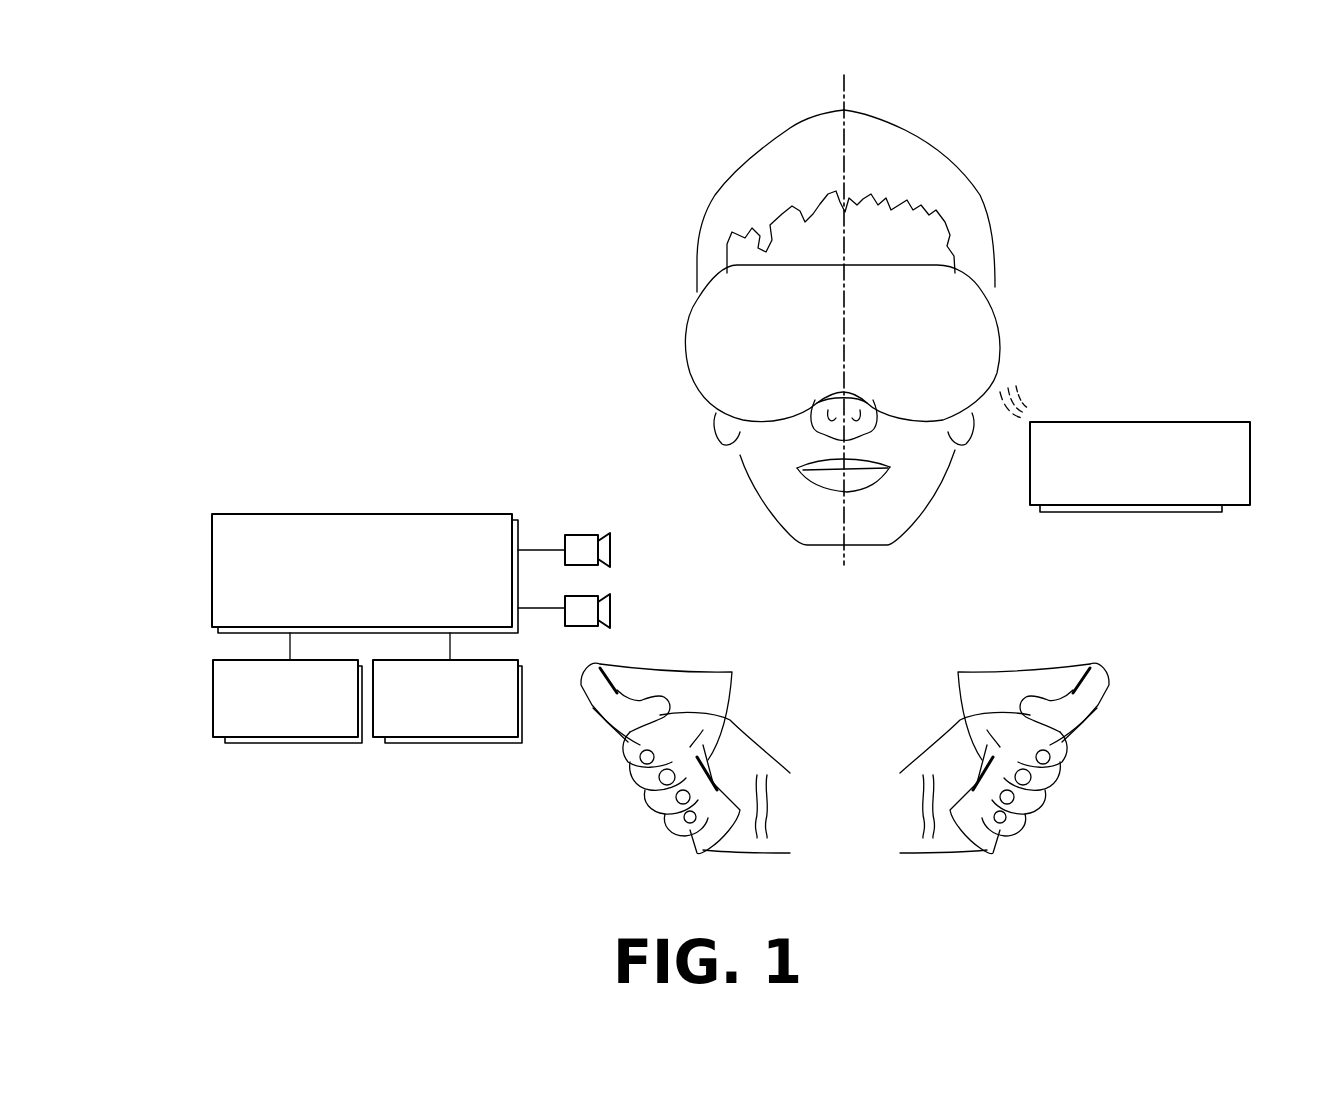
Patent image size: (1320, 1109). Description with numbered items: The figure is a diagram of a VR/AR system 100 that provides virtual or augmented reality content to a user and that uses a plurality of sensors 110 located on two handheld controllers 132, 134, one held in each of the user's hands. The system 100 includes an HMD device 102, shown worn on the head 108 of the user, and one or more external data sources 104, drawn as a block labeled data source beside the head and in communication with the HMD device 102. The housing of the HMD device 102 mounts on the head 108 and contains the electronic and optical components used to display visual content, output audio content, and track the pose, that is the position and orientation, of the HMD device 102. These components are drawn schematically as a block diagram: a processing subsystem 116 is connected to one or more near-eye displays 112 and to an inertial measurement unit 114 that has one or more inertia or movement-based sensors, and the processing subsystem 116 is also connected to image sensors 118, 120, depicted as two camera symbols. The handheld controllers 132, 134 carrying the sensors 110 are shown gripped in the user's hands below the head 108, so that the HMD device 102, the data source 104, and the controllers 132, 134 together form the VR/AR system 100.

The VR/AR system 100 is at (1100, 130).
The HMD device 102 is at (1012, 280).
The external data source 104 is at (1142, 420).
The head 108 is at (748, 148).
The sensor 110 is at (845, 755).
The near-eye display 112 is at (270, 745).
The inertial measurement unit (IMU) 114 is at (428, 745).
The processing subsystem 116 is at (212, 590).
The image sensor 118 is at (612, 546).
The image sensor 120 is at (612, 606).
The handheld controller 132 is at (598, 715).
The handheld controller 134 is at (1100, 710).